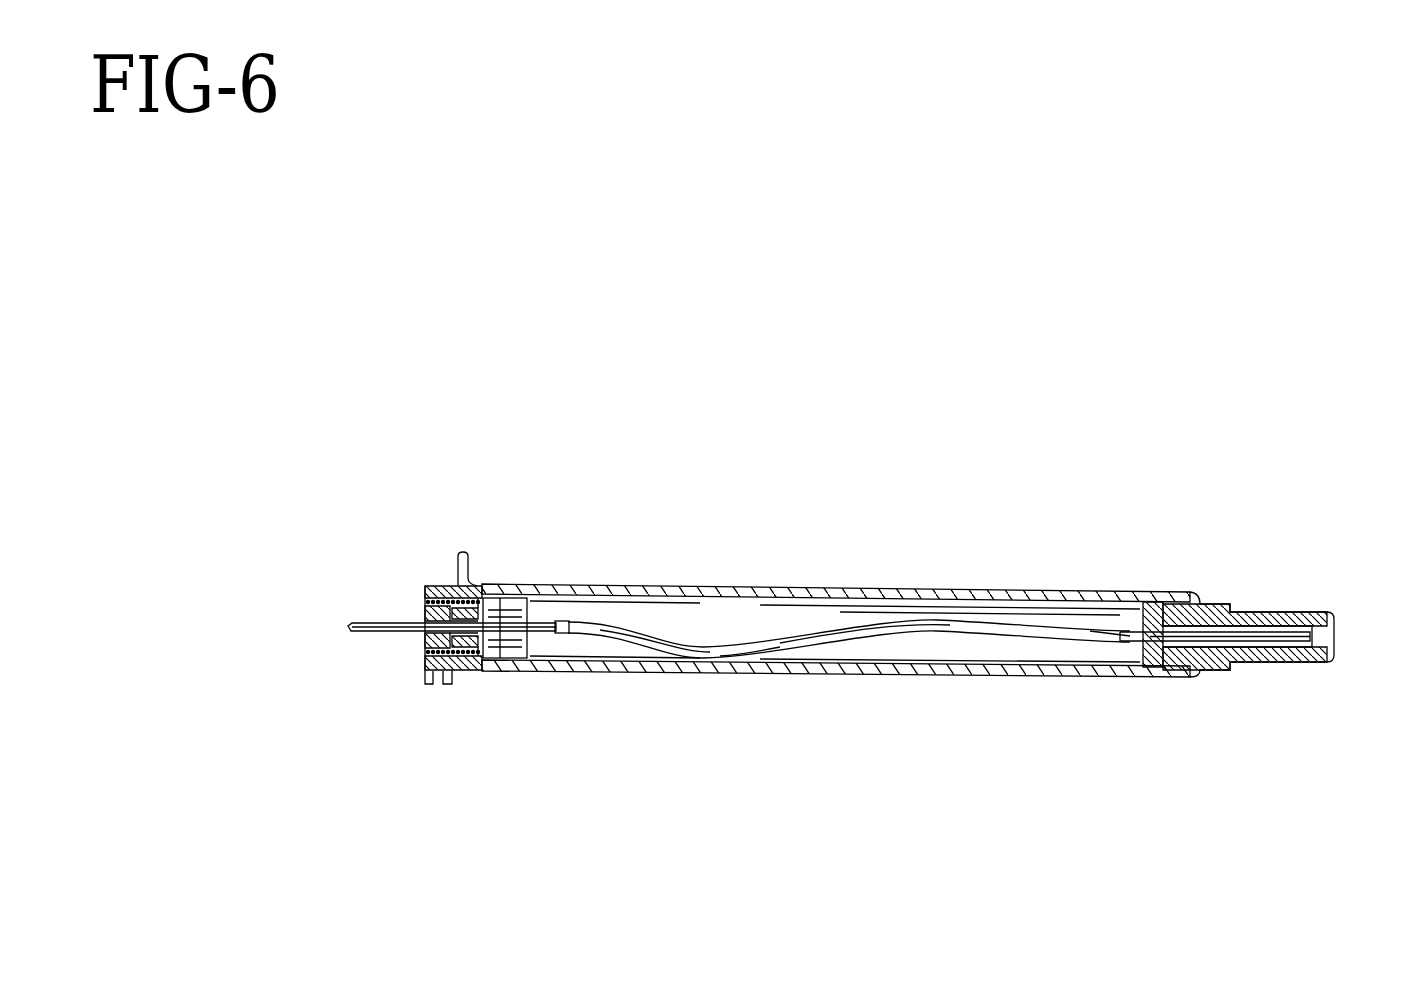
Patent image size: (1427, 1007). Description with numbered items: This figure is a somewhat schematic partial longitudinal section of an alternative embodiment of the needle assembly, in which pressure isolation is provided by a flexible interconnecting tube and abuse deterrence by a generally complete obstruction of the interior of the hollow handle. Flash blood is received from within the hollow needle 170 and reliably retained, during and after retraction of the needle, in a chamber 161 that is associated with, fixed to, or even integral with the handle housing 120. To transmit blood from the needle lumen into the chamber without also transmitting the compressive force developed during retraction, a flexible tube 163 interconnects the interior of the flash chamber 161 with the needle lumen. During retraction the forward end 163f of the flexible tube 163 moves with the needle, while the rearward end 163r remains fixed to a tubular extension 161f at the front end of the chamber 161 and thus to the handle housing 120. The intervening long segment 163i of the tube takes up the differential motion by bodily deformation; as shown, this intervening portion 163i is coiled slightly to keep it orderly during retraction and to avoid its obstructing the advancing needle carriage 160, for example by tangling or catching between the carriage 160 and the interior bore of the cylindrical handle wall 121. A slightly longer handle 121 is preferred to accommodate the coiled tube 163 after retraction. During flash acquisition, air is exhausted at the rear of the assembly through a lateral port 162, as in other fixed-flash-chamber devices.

The handle housing 120 is at (928, 595).
The cylindrical handle wall 121 is at (633, 596).
The needle carriage 160 is at (418, 642).
The chamber 161 is at (1300, 613).
The tubular extension 161f is at (1122, 650).
The lateral port 162 is at (1190, 600).
The flexible tube 163 is at (905, 630).
The forward end of the flexible tube 163f is at (578, 630).
The intervening long segment of the tube 163i is at (748, 652).
The rearward end of the flexible tube 163r is at (1113, 640).
The hollow needle 170 is at (363, 622).